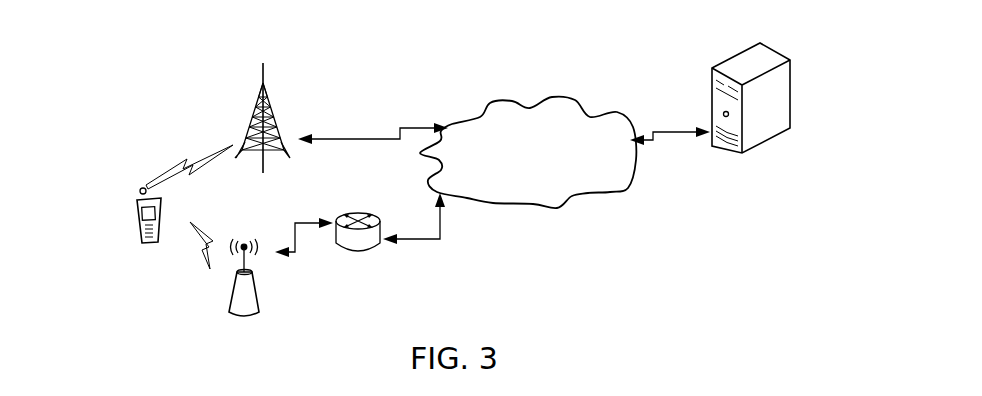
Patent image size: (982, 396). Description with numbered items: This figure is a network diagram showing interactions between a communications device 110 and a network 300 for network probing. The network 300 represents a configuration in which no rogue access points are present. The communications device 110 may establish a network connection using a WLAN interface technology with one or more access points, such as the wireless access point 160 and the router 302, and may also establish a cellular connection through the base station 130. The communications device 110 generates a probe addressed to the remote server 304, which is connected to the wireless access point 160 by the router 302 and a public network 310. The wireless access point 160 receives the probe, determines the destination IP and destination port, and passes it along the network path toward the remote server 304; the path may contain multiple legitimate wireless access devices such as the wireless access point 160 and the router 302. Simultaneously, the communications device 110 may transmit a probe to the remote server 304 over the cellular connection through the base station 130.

The network 300 is at (107, 87).
The communications device 110 is at (138, 242).
The base station 130 is at (275, 84).
The wireless access point 160 is at (255, 272).
The router 302 is at (383, 241).
The remote server 304 is at (760, 43).
The public network 310 is at (552, 98).